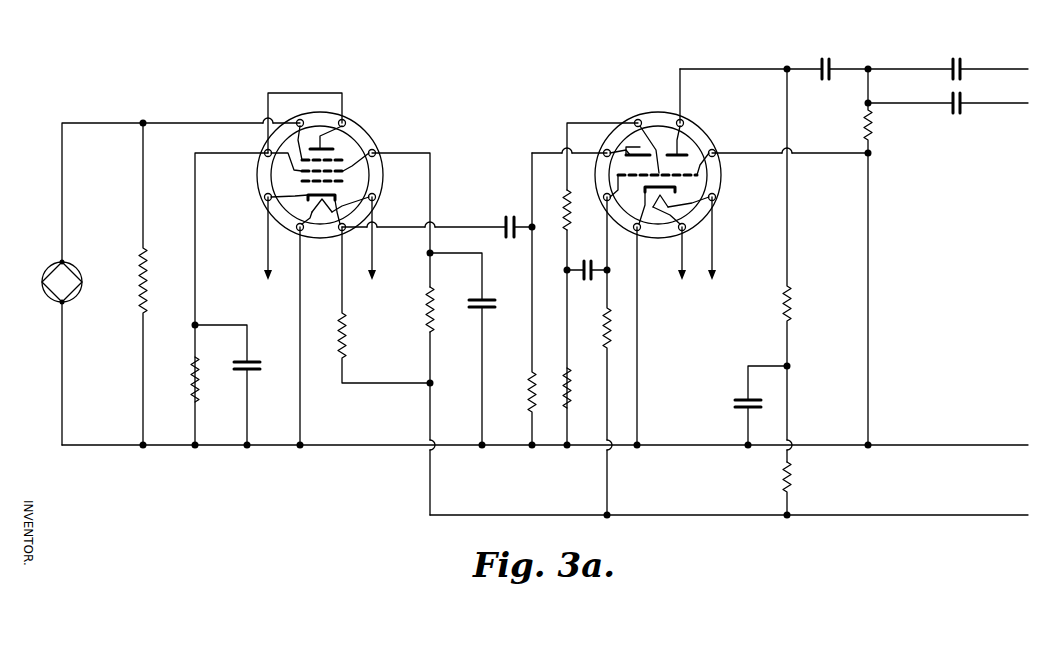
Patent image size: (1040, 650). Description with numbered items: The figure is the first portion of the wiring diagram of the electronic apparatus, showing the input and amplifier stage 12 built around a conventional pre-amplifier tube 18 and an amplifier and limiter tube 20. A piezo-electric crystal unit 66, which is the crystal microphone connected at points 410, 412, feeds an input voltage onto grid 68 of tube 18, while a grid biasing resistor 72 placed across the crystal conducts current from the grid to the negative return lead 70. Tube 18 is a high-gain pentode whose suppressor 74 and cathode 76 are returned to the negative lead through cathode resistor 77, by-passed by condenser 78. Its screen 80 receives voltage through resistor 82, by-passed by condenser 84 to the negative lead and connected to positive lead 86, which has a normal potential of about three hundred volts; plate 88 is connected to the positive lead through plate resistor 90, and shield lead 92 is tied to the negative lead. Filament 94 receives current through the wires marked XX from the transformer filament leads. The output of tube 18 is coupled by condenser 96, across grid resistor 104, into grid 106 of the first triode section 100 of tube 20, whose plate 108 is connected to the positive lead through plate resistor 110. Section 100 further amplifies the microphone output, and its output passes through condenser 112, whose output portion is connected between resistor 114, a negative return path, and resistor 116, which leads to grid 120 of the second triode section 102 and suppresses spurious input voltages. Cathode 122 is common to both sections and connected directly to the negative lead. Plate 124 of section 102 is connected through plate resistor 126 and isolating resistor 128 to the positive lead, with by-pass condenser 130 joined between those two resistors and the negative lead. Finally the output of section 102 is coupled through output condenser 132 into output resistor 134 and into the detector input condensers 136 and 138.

The oscillator stage 12 is at (498, 40).
The pre-amplifier tube 18 is at (339, 187).
The amplifier and limiter tube 20 is at (682, 187).
The piezo-electric crystal unit 66 is at (58, 272).
The grid 68 is at (311, 194).
The negative return lead 70 is at (152, 449).
The grid biasing resistor 72 is at (147, 277).
The suppressor 74 is at (268, 138).
The cathode 76 is at (360, 190).
The cathode resistor 77 is at (193, 380).
The condenser 78 is at (248, 372).
The screen 80 is at (366, 172).
The resistor 82 is at (433, 300).
The condenser 84 is at (484, 297).
The positive lead 86 is at (468, 517).
The plate 88 is at (321, 123).
The plate resistor 90 is at (345, 333).
The shield lead 92 is at (300, 406).
The filament 94 is at (312, 251).
The condenser 96 is at (506, 222).
The triode section 100 is at (630, 130).
The triode section 102 is at (700, 137).
The grid resistor 104 is at (529, 398).
The grid 106 is at (646, 185).
The plate 108 is at (635, 160).
The plate resistor 110 is at (603, 329).
The condenser 112 is at (585, 263).
The resistor 114 is at (569, 386).
The resistor 116 is at (569, 210).
The grid 120 is at (686, 149).
The cathode 122 is at (700, 194).
The plate 124 is at (690, 132).
The plate resistor 126 is at (791, 306).
The isolating resistor 128 is at (791, 479).
The by-pass condenser 130 is at (745, 393).
The output condenser 132 is at (833, 63).
The output resistor 134 is at (872, 126).
The detector input condenser 136 is at (963, 63).
The detector input condenser 138 is at (960, 106).
The point 410 is at (64, 305).
The point 412 is at (64, 268).